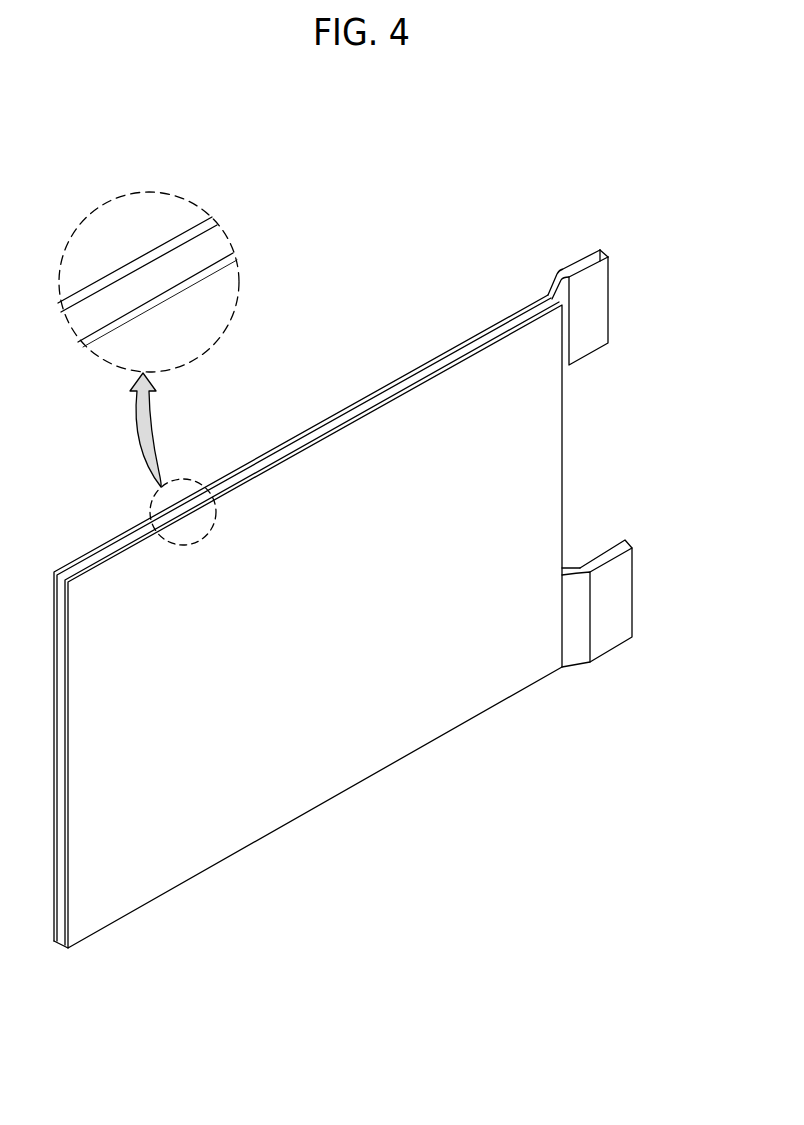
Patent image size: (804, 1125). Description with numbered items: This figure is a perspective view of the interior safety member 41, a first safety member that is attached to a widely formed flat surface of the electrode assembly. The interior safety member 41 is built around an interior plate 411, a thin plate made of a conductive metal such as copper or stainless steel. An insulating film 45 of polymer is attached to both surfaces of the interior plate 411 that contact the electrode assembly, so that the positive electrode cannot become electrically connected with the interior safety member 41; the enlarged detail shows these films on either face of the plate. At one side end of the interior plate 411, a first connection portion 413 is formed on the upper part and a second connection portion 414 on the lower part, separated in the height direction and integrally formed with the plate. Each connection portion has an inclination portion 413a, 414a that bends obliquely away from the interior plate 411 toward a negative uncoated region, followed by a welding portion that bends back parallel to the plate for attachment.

The interior safety member 41 is at (358, 393).
The interior plate 411 is at (217, 245).
The insulating film 45 is at (181, 234).
The first connection portion 413 is at (597, 305).
The bent portion of first electrode tab 413a is at (576, 278).
The second connection portion 414 is at (617, 598).
The bent portion of second electrode tab 414a is at (575, 648).